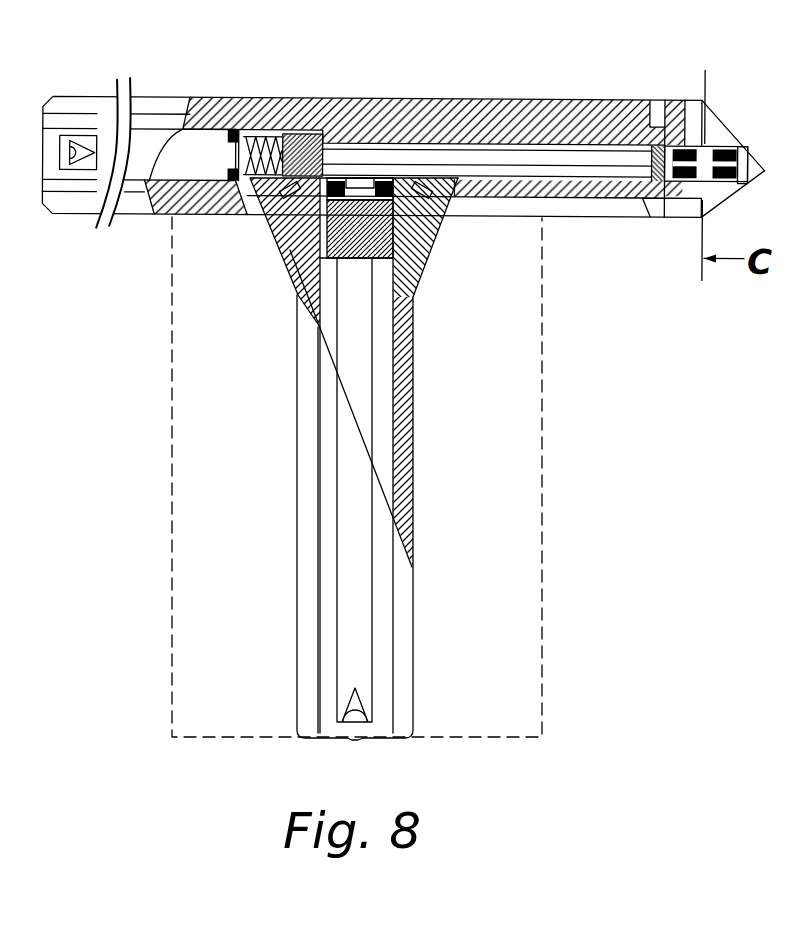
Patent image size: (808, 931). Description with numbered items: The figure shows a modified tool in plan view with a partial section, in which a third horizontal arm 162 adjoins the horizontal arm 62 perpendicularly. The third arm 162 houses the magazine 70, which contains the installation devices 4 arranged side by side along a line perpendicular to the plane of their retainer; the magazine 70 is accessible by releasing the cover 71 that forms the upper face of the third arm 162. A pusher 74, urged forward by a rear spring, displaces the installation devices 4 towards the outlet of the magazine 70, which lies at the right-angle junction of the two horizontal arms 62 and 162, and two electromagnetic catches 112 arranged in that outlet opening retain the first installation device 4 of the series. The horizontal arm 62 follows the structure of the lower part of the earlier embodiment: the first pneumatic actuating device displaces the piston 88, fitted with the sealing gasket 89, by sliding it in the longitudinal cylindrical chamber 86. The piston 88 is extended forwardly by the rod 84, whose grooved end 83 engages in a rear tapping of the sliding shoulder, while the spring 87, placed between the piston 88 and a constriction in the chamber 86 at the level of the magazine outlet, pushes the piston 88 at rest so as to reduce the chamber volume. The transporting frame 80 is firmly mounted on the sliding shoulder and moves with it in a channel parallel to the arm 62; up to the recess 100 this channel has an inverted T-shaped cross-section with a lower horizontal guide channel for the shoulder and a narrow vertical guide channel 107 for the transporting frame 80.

The horizontal arm 62 is at (182, 97).
The longitudinal cylindrical chamber 86 is at (178, 158).
The spring 87 is at (252, 173).
The piston 88 is at (287, 130).
The rod 84 is at (447, 153).
The vertical guide channel 107 is at (605, 133).
The grooved end 83 is at (628, 132).
The recess 100 is at (722, 122).
The sealing gasket 89 is at (223, 214).
The electromagnetic catches 112 is at (588, 266).
The transporting frame 80 is at (667, 185).
The installation devices 4 is at (407, 247).
The pusher 74 is at (328, 243).
The magazine 70 is at (360, 363).
The cover 71 is at (332, 532).
The third horizontal arm 162 is at (297, 638).